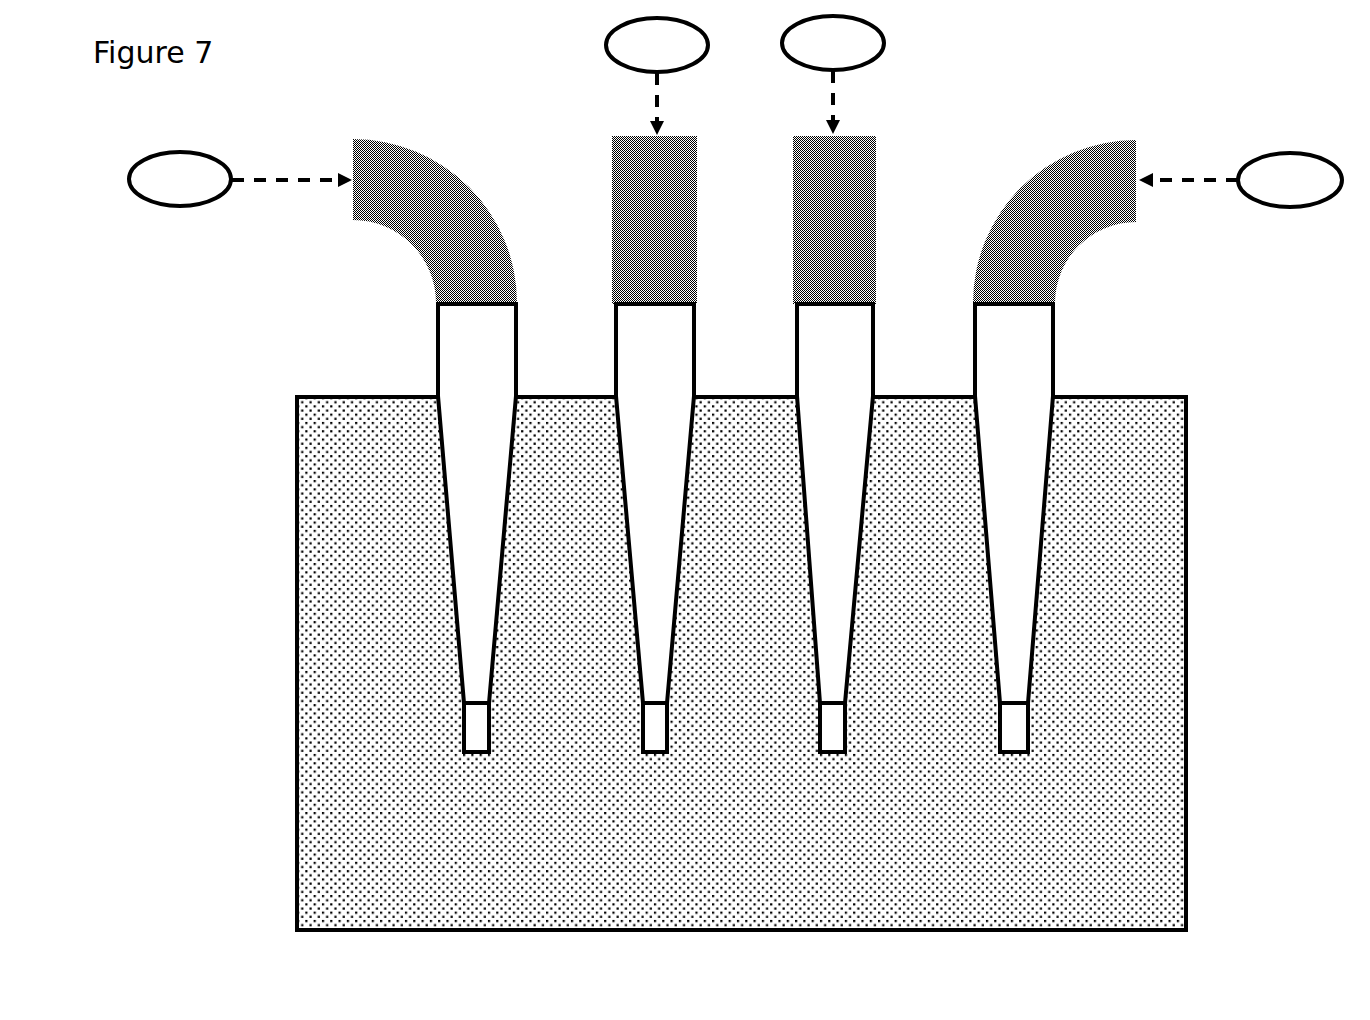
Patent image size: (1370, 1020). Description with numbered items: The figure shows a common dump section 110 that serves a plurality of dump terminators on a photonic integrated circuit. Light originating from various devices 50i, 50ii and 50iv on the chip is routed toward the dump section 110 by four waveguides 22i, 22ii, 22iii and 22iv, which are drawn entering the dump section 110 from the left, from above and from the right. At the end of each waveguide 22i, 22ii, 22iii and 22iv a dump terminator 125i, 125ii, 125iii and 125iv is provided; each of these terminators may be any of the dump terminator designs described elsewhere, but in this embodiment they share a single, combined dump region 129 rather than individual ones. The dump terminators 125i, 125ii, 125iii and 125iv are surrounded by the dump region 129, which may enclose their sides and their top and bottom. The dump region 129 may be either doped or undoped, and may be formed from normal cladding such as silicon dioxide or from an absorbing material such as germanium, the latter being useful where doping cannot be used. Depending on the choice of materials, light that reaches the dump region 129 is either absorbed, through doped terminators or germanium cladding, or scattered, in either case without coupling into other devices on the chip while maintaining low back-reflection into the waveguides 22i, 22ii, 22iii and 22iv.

The waveguide 22i is at (352, 157).
The waveguide 22ii is at (637, 135).
The waveguide 22iii is at (863, 135).
The waveguide 22iv is at (1137, 152).
The device 50i is at (240, 179).
The device 50ii is at (745, 75).
The device 50iv is at (1240, 180).
The dump section 110 is at (303, 343).
The dump terminator 125i is at (457, 427).
The dump terminator 125ii is at (637, 470).
The dump terminator 125iii is at (847, 473).
The dump terminator 125iv is at (1033, 421).
The dump region 129 is at (741, 663).